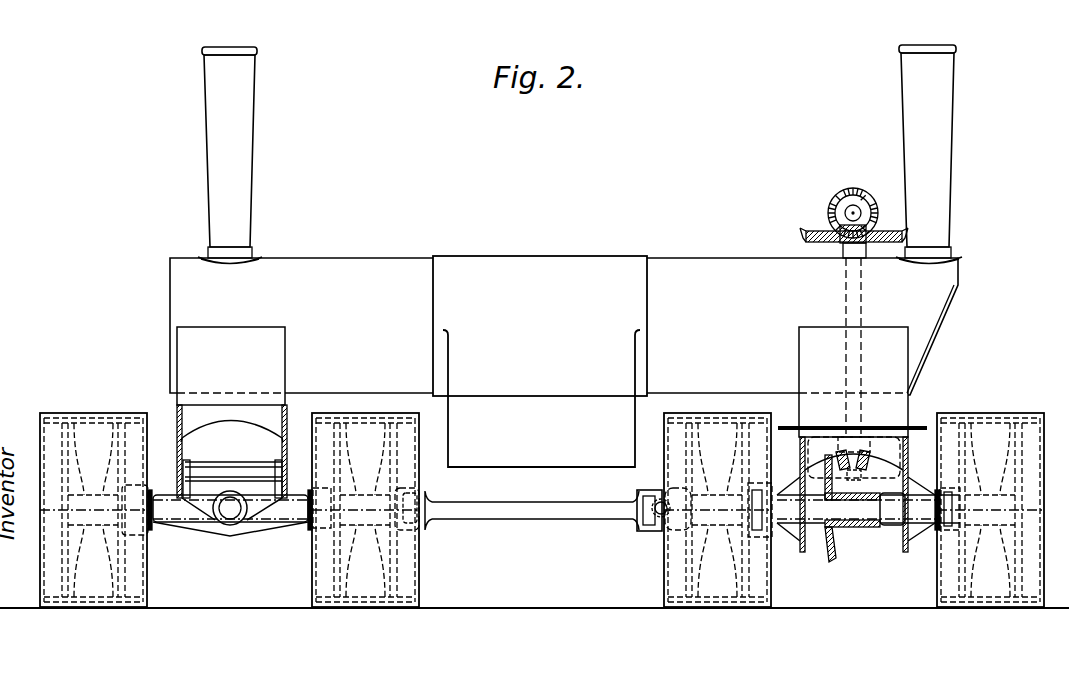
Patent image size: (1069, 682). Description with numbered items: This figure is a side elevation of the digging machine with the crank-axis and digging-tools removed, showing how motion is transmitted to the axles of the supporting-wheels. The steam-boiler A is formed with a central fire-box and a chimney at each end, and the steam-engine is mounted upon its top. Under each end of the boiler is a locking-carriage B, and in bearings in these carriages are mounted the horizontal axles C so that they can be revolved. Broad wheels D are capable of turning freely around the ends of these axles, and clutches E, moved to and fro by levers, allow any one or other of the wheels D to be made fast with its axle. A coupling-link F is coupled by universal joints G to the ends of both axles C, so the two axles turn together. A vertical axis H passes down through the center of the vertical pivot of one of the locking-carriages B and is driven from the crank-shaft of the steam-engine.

The steam-boiler A is at (566, 256).
The locking-carriage B is at (172, 460).
The horizontal axle C is at (182, 510).
The broad wheel D is at (548, 510).
The clutch E is at (953, 515).
The coupling-link F is at (532, 507).
The universal joint G is at (413, 512).
The vertical axis H is at (863, 308).